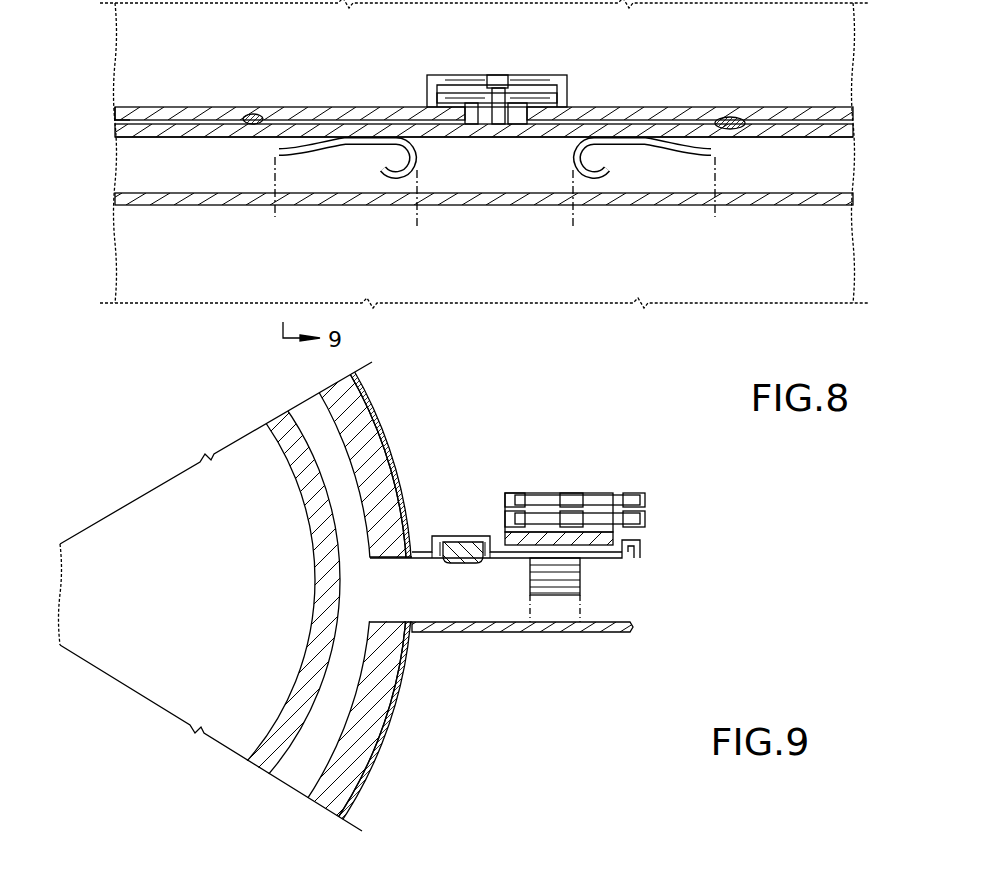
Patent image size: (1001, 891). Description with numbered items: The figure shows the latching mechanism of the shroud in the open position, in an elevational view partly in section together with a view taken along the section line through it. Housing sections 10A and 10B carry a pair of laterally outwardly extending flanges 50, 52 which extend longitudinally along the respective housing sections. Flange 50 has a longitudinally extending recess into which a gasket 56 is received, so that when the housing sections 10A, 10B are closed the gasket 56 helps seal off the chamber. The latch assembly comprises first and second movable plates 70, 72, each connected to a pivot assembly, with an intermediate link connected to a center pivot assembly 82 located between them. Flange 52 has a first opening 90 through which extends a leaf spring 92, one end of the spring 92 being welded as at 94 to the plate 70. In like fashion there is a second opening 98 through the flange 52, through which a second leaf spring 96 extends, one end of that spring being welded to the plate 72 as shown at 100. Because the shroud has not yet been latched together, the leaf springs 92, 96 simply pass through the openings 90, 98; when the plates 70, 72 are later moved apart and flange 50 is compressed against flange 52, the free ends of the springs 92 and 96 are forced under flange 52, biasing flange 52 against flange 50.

In FIG. 9, the housing section 10A is at (385, 432).
In FIG. 9, the housing section 10B is at (410, 680).
In FIG. 8, the flange 50 is at (843, 138).
In FIG. 9, the flange 50 is at (424, 548).
In FIG. 9, the flange 52 is at (495, 625).
In FIG. 9, the gasket 56 is at (455, 562).
In FIG. 8, the first movable plate 70 is at (810, 113).
In FIG. 8, the second movable plate 72 is at (118, 113).
In FIG. 8, the center pivot assembly 82 is at (500, 77).
In FIG. 8, the first opening 90 is at (623, 135).
In FIG. 8, the leaf spring 92 is at (637, 150).
In FIG. 8, the weld 94 is at (722, 123).
In FIG. 8, the leaf spring 96 is at (370, 162).
In FIG. 9, the leaf spring 96 is at (580, 575).
In FIG. 8, the second opening 98 is at (312, 132).
In FIG. 8, the weld 100 is at (253, 123).